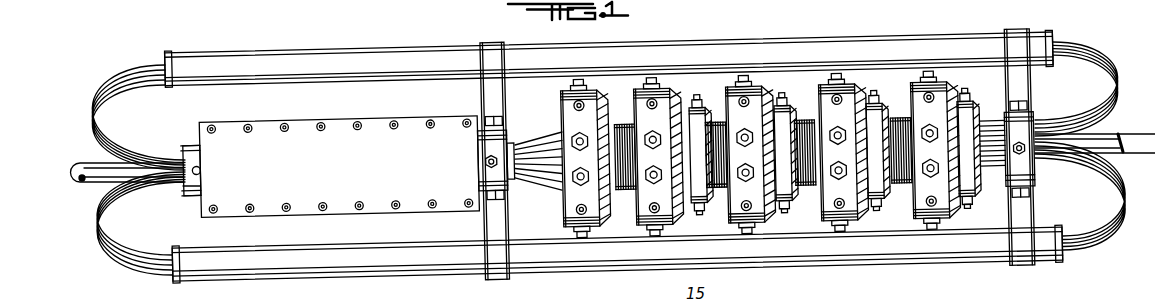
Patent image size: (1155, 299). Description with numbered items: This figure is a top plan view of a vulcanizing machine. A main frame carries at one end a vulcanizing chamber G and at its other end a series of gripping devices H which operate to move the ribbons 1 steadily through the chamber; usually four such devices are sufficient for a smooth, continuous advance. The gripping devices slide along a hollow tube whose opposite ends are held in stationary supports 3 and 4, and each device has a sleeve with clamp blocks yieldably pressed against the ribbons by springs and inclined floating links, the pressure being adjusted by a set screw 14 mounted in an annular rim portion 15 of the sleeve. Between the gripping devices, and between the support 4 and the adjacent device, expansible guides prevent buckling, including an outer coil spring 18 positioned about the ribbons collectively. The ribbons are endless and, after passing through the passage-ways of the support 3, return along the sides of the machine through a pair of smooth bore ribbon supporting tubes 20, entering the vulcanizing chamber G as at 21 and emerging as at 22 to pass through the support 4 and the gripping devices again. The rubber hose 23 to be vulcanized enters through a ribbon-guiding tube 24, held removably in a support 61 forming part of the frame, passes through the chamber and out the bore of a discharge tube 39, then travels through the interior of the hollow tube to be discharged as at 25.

The ribbons 1 is at (143, 78).
The stationary support 3 is at (1035, 177).
The stationary support 4 is at (607, 201).
The adjustable set screw 14 is at (820, 94).
The annular rim portion 15 is at (822, 200).
The coil spring 18 is at (804, 124).
The ribbon supporting tubes 20 is at (453, 52).
The ribbon entry point 21 is at (133, 160).
The ribbon exit point 22 is at (513, 146).
The rubber hose 23 is at (82, 170).
The ribbon-guiding tube 24 is at (170, 158).
The hose discharge point 25 is at (1082, 147).
The discharge tube 39 is at (512, 178).
The support 61 is at (187, 196).
The vulcanizing chamber G is at (339, 167).
The gripping devices H is at (565, 104).